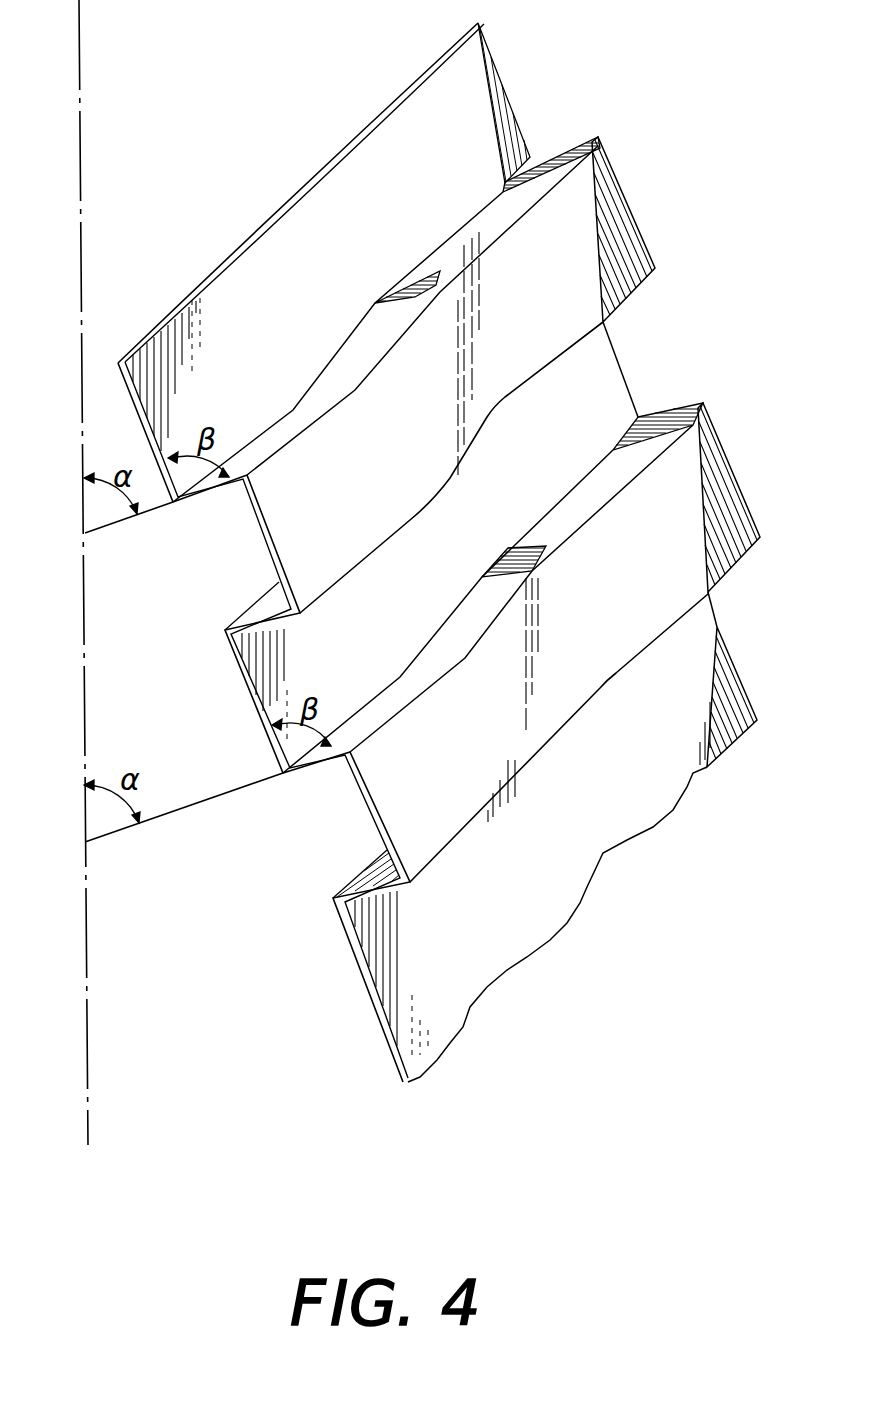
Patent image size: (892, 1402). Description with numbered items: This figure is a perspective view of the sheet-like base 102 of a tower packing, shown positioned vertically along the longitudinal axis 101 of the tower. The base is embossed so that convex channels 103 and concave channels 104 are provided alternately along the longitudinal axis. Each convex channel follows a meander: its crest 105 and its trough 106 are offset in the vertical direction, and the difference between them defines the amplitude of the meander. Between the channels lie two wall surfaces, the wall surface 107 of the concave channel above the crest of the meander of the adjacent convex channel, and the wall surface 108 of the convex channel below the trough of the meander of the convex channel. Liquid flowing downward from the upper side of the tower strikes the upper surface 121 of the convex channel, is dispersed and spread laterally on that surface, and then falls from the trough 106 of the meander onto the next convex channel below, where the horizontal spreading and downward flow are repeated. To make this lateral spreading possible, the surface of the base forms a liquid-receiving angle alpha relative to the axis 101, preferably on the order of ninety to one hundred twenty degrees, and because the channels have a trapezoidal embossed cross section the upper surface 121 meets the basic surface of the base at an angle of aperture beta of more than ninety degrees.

The axis 101 is at (80, 135).
The sheet-like base 102 is at (140, 340).
The convex channel 103 is at (610, 228).
The concave channel 104 is at (508, 128).
The crest 105 is at (405, 298).
The trough 106 is at (333, 397).
The wall surface of the concave channel 107 is at (347, 247).
The wall surface of the convex channel 108 is at (377, 420).
The upper surface 121 is at (548, 150).